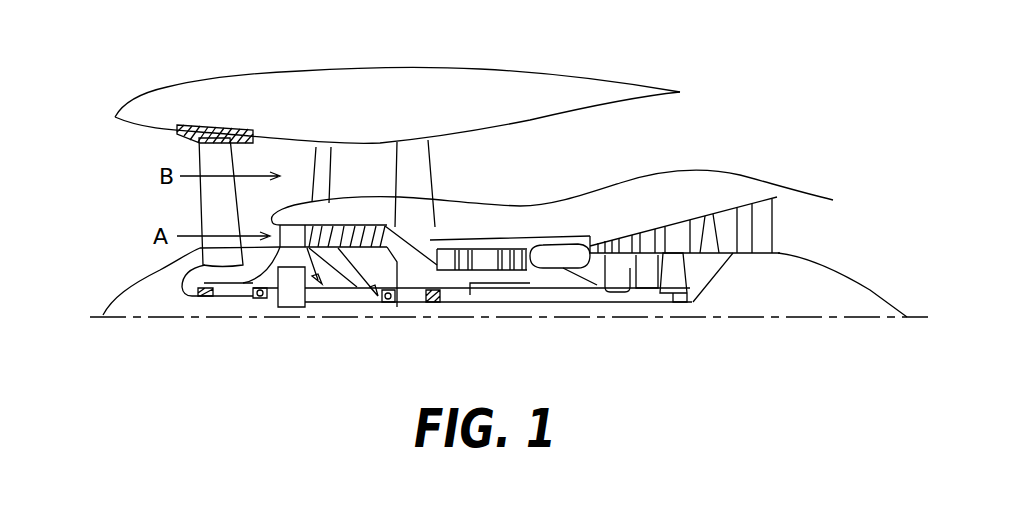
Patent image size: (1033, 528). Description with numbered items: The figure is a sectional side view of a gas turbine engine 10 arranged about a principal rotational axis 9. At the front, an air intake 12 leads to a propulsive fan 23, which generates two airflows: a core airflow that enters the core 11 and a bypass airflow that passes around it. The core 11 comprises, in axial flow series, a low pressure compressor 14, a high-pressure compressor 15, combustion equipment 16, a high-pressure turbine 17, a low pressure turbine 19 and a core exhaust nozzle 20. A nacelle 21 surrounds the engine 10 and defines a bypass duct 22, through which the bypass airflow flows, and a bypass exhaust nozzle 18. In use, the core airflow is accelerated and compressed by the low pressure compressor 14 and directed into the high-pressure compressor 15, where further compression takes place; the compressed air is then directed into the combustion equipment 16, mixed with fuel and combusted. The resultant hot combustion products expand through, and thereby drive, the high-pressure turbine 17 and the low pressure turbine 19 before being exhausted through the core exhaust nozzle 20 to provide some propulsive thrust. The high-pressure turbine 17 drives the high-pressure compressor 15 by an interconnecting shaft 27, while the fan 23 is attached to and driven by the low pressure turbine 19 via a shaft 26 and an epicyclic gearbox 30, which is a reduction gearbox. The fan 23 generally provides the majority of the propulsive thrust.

The principal rotational axis 9 is at (740, 319).
The gas turbine engine 10 is at (183, 87).
The core 11 is at (551, 216).
The air intake 12 is at (121, 169).
The low pressure compressor 14 is at (357, 232).
The high-pressure compressor 15 is at (487, 230).
The combustion equipment 16 is at (570, 260).
The high-pressure turbine 17 is at (620, 240).
The bypass exhaust nozzle 18 is at (748, 123).
The low pressure turbine 19 is at (747, 217).
The core exhaust nozzle 20 is at (810, 236).
The nacelle 21 is at (422, 83).
The bypass duct 22 is at (660, 141).
The propulsive fan 23 is at (200, 202).
The shaft 26 is at (490, 303).
The interconnecting shaft 27 is at (527, 293).
The epicyclic gearbox 30 is at (293, 300).